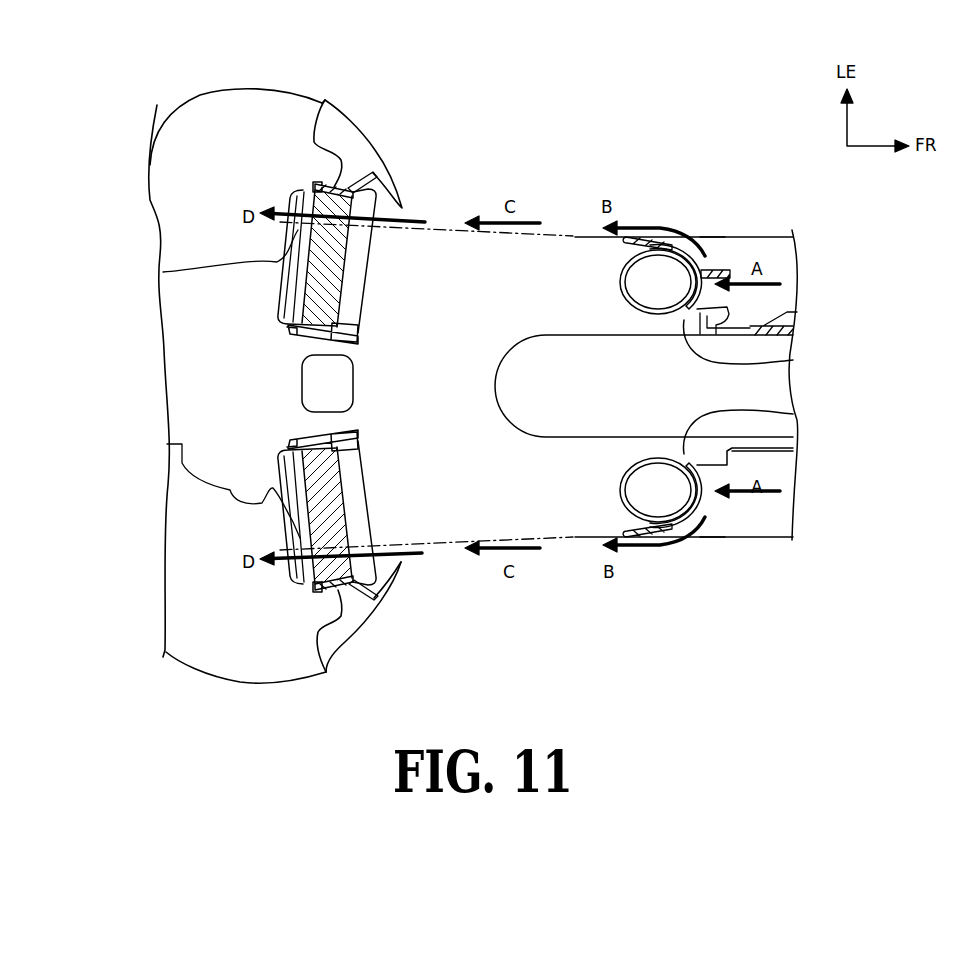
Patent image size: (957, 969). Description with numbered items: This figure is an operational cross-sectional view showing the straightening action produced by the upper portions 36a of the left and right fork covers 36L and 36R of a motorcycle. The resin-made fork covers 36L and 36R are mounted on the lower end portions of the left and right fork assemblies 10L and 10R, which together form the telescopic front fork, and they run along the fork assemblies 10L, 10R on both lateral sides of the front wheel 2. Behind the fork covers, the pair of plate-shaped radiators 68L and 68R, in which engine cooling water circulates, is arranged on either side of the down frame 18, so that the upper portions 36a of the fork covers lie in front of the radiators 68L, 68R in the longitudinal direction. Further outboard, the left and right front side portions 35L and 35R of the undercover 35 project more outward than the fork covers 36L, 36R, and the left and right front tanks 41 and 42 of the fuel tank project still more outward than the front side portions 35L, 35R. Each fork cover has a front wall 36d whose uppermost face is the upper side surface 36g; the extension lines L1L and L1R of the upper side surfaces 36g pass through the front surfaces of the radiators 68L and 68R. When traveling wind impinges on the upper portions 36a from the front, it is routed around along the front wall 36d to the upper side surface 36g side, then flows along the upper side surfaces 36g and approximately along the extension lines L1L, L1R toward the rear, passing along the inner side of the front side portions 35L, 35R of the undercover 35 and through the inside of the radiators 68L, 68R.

The left front tank 41 is at (187, 109).
The right front tank 42 is at (200, 668).
The undercover 35 is at (382, 158).
The left front side portion of the undercover 35L is at (359, 122).
The right front side portion of the undercover 35R is at (383, 622).
The left radiator 68L is at (300, 285).
The right radiator 68R is at (307, 458).
The down frame 18 is at (302, 375).
The front wheel 2 is at (767, 390).
The left fork assembly 10L is at (793, 357).
The right fork assembly 10R is at (795, 418).
The left fork cover 36L is at (757, 237).
The right fork cover 36R is at (757, 538).
The upper portion 36a is at (712, 235).
The upper side surface 36g is at (652, 237).
The front wall 36d is at (701, 257).
The extension line of the left upper side surface L1L is at (563, 232).
The extension line of the right upper side surface L1R is at (573, 542).